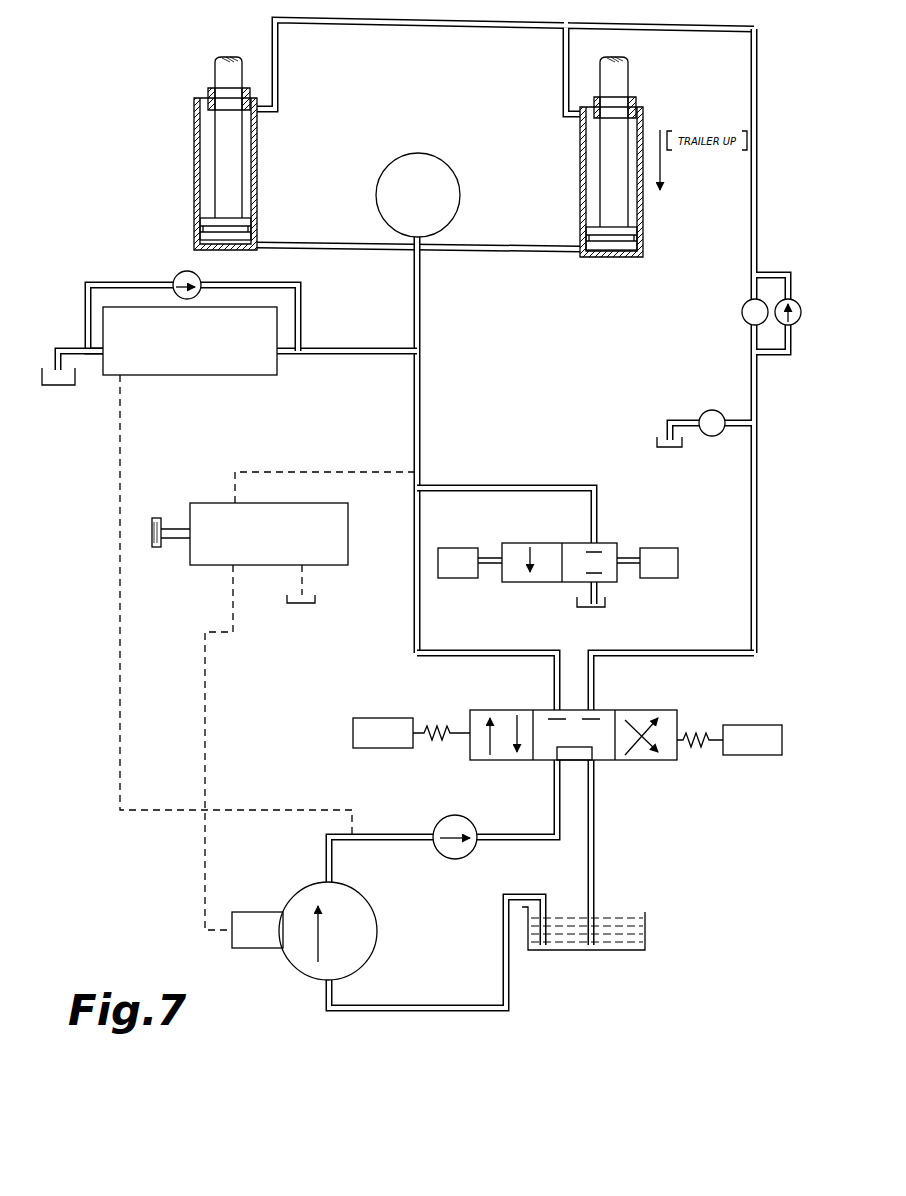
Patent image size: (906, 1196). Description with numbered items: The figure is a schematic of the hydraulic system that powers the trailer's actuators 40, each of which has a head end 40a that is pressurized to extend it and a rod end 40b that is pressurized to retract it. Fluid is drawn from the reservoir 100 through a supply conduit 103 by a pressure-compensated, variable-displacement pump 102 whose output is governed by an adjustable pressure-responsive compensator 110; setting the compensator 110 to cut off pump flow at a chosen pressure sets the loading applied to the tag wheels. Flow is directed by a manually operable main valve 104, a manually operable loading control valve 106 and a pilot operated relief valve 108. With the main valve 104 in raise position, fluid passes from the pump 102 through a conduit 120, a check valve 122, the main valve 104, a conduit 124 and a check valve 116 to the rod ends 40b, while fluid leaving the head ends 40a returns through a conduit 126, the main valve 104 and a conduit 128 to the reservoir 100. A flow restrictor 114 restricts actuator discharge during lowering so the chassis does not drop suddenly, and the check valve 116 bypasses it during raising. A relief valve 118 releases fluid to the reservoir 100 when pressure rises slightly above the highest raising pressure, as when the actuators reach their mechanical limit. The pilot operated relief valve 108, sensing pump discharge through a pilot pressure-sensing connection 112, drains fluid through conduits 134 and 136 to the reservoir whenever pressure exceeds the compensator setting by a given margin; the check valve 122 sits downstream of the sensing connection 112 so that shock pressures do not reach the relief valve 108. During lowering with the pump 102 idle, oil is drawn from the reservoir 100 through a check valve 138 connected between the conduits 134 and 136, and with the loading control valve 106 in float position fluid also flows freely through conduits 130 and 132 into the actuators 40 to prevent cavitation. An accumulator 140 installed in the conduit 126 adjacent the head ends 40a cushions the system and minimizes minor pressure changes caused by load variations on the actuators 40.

The actuator 40 is at (451, 173).
The head end 40a is at (240, 253).
The rod end 40b is at (248, 155).
The reservoir 100 is at (73, 384).
The pressure-compensated, variable-displacement pump 102 is at (372, 906).
The supply conduit 103 is at (468, 1012).
The main valve 104 is at (680, 720).
The loading control valve 106 is at (500, 548).
The pilot operated relief valve 108 is at (228, 375).
The adjustable pressure-responsive compensator 110 is at (215, 503).
The pilot pressure-sensing connection 112 is at (120, 694).
The flow restrictor 114 is at (742, 308).
The check valve 116 is at (792, 300).
The relief valve 118 is at (712, 410).
The conduit 120 is at (528, 843).
The check valve 122 is at (455, 860).
The conduit 124 is at (757, 476).
The conduit 126 is at (422, 416).
The conduit 128 is at (596, 857).
The conduit 130 is at (598, 591).
The conduit 132 is at (597, 523).
The conduit 134 is at (325, 348).
The conduit 136 is at (70, 348).
The check valve 138 is at (177, 275).
The accumulator 140 is at (437, 160).